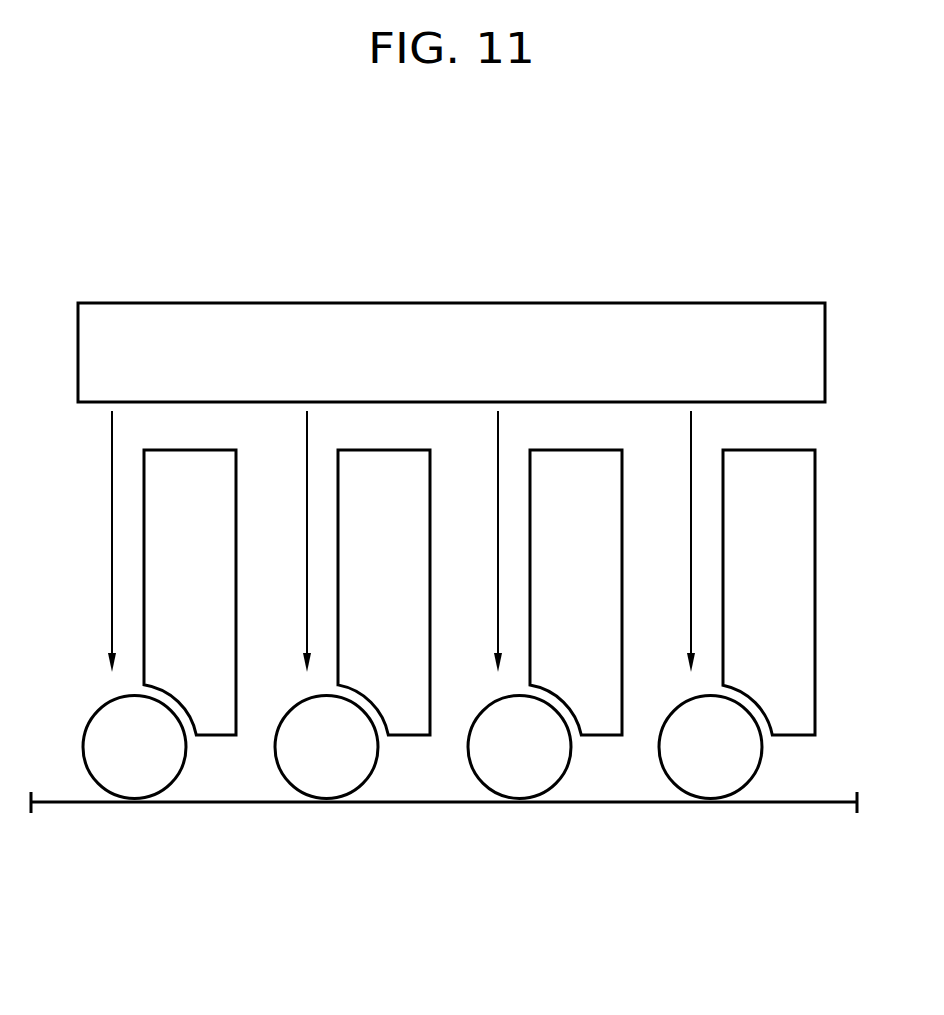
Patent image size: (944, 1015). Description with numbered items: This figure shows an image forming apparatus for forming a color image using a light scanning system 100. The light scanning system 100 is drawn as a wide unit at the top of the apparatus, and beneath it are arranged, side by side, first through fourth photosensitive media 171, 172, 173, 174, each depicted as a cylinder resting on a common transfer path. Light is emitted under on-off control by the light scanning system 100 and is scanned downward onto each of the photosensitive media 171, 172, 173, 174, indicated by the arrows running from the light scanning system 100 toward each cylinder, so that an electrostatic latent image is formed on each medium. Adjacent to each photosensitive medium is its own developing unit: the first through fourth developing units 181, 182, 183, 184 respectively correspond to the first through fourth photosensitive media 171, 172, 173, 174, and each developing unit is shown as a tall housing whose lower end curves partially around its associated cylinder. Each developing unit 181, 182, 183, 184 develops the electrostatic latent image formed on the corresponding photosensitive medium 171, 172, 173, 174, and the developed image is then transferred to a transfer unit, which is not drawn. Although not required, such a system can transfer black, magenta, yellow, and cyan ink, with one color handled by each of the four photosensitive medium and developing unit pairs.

The light scanning system 100 is at (450, 315).
The first photosensitive medium 171 is at (134, 782).
The second photosensitive medium 172 is at (327, 780).
The third photosensitive medium 173 is at (515, 780).
The fourth photosensitive medium 174 is at (708, 778).
The first developing unit 181 is at (217, 713).
The second developing unit 182 is at (410, 712).
The third developing unit 183 is at (600, 710).
The fourth developing unit 184 is at (793, 710).